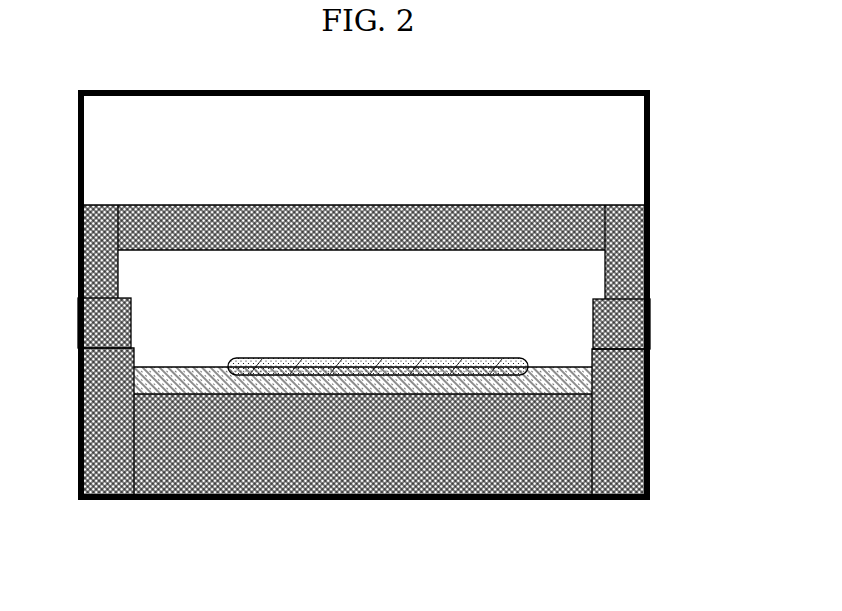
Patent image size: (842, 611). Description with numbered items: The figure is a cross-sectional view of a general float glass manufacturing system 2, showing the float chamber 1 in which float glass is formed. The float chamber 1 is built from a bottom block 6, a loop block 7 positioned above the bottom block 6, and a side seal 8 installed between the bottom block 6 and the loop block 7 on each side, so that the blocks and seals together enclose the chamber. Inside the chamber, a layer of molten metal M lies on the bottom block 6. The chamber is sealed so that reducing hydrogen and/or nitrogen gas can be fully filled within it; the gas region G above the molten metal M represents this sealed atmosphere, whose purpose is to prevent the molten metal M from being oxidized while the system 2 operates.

The float chamber 1 is at (302, 532).
The float glass manufacturing system 2 is at (557, 512).
The bottom block 6 is at (632, 413).
The loop block 7 is at (655, 135).
The side seal 8 is at (78, 323).
The molten metal M is at (563, 370).
The gas region G is at (431, 358).